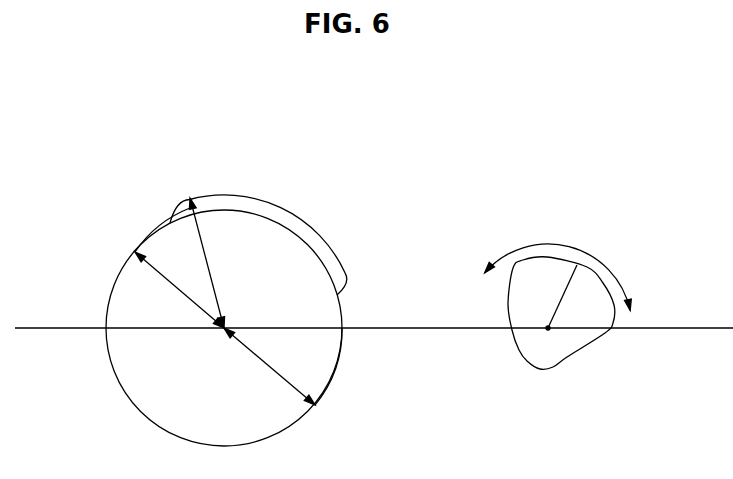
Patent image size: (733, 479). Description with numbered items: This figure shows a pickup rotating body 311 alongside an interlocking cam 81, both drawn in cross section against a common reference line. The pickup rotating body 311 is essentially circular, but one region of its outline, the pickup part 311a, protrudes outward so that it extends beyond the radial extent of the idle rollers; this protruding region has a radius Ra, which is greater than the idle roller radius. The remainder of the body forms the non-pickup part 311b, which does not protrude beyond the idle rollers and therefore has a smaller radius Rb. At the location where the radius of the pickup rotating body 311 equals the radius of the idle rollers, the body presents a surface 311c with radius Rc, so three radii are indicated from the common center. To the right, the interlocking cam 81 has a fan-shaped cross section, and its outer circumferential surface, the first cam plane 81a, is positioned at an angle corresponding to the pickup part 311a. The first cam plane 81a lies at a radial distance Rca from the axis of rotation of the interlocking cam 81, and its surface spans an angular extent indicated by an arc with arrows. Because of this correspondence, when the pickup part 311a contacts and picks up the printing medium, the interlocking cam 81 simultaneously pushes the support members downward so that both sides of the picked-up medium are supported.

The pickup rotating body 311 is at (290, 192).
The pickup part 311a is at (184, 201).
The non-pickup part 311b is at (157, 231).
The surface 311c is at (335, 370).
The radius of pickup part Ra is at (213, 263).
The radius of non-pickup part Rb is at (179, 290).
The radius of surface Rc is at (269, 366).
The interlocking cam 81 is at (598, 373).
The first cam plane 81a is at (605, 278).
The radial distance of first cam plane Rca is at (571, 296).